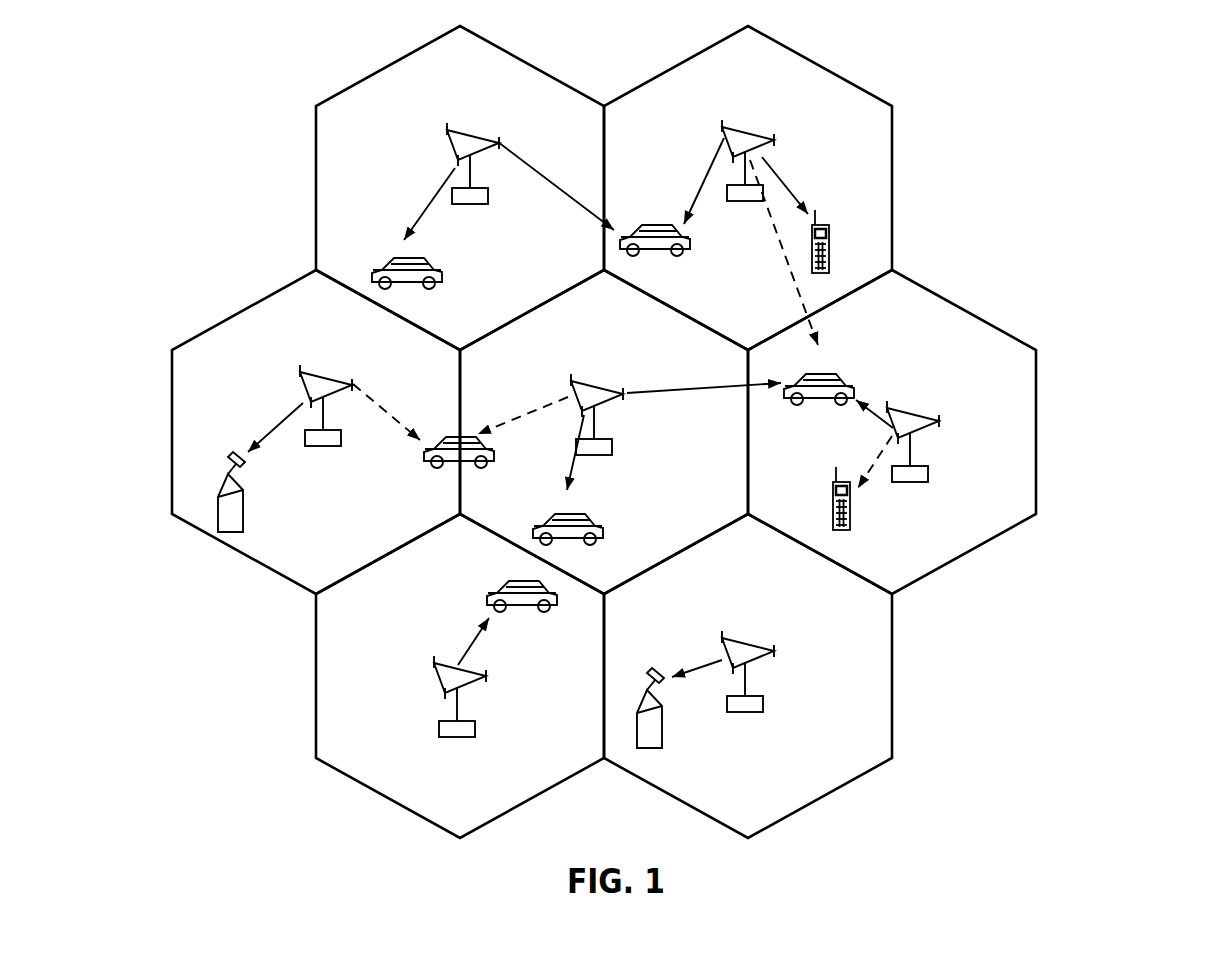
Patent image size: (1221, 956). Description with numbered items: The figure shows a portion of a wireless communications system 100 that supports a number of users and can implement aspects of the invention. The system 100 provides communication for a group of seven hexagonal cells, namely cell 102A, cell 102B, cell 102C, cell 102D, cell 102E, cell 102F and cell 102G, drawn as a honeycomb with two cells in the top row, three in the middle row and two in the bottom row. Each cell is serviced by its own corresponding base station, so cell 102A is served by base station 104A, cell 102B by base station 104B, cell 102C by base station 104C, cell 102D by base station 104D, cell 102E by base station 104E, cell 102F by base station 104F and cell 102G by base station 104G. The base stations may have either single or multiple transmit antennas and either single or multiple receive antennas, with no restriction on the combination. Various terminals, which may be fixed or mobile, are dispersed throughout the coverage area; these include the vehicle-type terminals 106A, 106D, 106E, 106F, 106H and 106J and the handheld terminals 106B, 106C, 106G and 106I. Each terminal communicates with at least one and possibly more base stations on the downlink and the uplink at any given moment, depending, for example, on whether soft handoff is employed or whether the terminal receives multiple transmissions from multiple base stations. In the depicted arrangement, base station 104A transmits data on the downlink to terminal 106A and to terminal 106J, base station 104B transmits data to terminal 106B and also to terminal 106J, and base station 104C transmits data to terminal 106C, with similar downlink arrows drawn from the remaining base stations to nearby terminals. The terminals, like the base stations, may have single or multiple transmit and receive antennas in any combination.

The communications system 100 is at (1120, 103).
The cell 102A is at (398, 58).
The cell 102B is at (811, 60).
The cell 102C is at (240, 311).
The cell 102D is at (641, 314).
The cell 102E is at (1037, 426).
The cell 102F is at (318, 682).
The cell 102G is at (896, 644).
The base station 104A is at (450, 128).
The base station 104B is at (724, 130).
The base station 104C is at (302, 370).
The base station 104D is at (574, 380).
The base station 104E is at (888, 408).
The base station 104F is at (436, 662).
The base station 104G is at (726, 636).
The terminal 106A is at (404, 257).
The terminal 106B is at (816, 226).
The terminal 106C is at (236, 452).
The terminal 106D is at (562, 514).
The terminal 106E is at (820, 374).
The terminal 106F is at (510, 581).
The terminal 106G is at (656, 670).
The terminal 106H is at (447, 438).
The terminal 106I is at (836, 480).
The terminal 106J is at (658, 222).